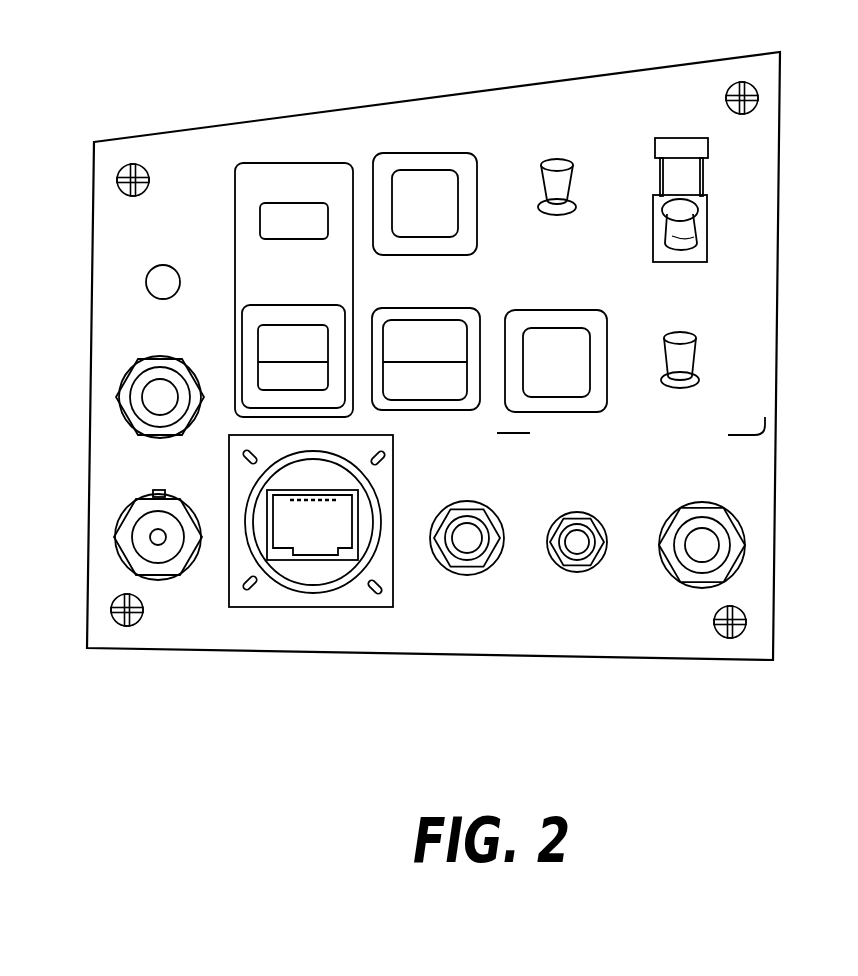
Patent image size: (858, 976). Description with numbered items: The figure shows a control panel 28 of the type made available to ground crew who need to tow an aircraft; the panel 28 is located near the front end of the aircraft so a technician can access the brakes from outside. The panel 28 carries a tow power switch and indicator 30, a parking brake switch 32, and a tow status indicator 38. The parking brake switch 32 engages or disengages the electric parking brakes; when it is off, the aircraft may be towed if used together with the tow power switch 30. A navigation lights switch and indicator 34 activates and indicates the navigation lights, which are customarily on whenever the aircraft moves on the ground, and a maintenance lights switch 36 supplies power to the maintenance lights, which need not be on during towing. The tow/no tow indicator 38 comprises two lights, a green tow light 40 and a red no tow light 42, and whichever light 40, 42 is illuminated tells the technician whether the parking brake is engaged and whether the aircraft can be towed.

The control panel 28 is at (454, 366).
The tow power switch and indicator 30 is at (607, 310).
The parking brake switch 32 is at (700, 378).
The navigation lights switch and indicator 34 is at (373, 152).
The maintenance lights switch 36 is at (540, 183).
The tow/no tow indicator 38 is at (320, 494).
The tow light 40 is at (403, 400).
The no tow light 42 is at (465, 345).